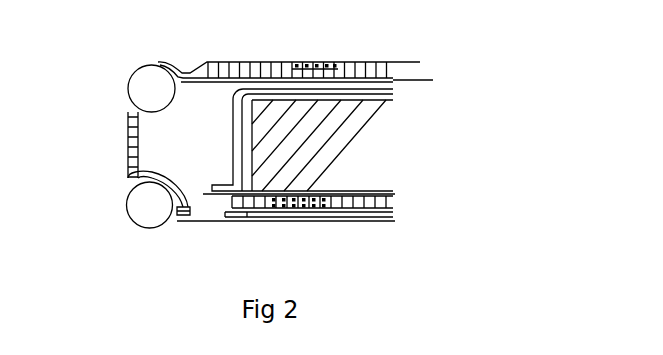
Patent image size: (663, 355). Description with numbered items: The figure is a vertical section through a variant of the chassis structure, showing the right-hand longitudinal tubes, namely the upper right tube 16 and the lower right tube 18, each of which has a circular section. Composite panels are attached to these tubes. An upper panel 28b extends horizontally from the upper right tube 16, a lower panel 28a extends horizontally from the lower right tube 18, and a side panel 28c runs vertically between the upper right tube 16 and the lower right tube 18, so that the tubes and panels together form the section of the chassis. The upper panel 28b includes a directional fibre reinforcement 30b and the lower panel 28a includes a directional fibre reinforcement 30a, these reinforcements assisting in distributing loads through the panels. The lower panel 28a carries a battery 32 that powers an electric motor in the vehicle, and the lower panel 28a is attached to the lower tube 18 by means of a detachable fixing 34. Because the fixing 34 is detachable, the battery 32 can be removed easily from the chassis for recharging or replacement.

The upper right longitudinal tube 16 is at (147, 88).
The lower right longitudinal tube 18 is at (134, 206).
The lower panel 28a is at (246, 210).
The upper panel 28b is at (269, 74).
The side panel 28c is at (126, 148).
The directional fibre reinforcement 30a is at (311, 209).
The directional fibre reinforcement 30b is at (320, 67).
The battery 32 is at (365, 152).
The detachable fixing 34 is at (181, 222).